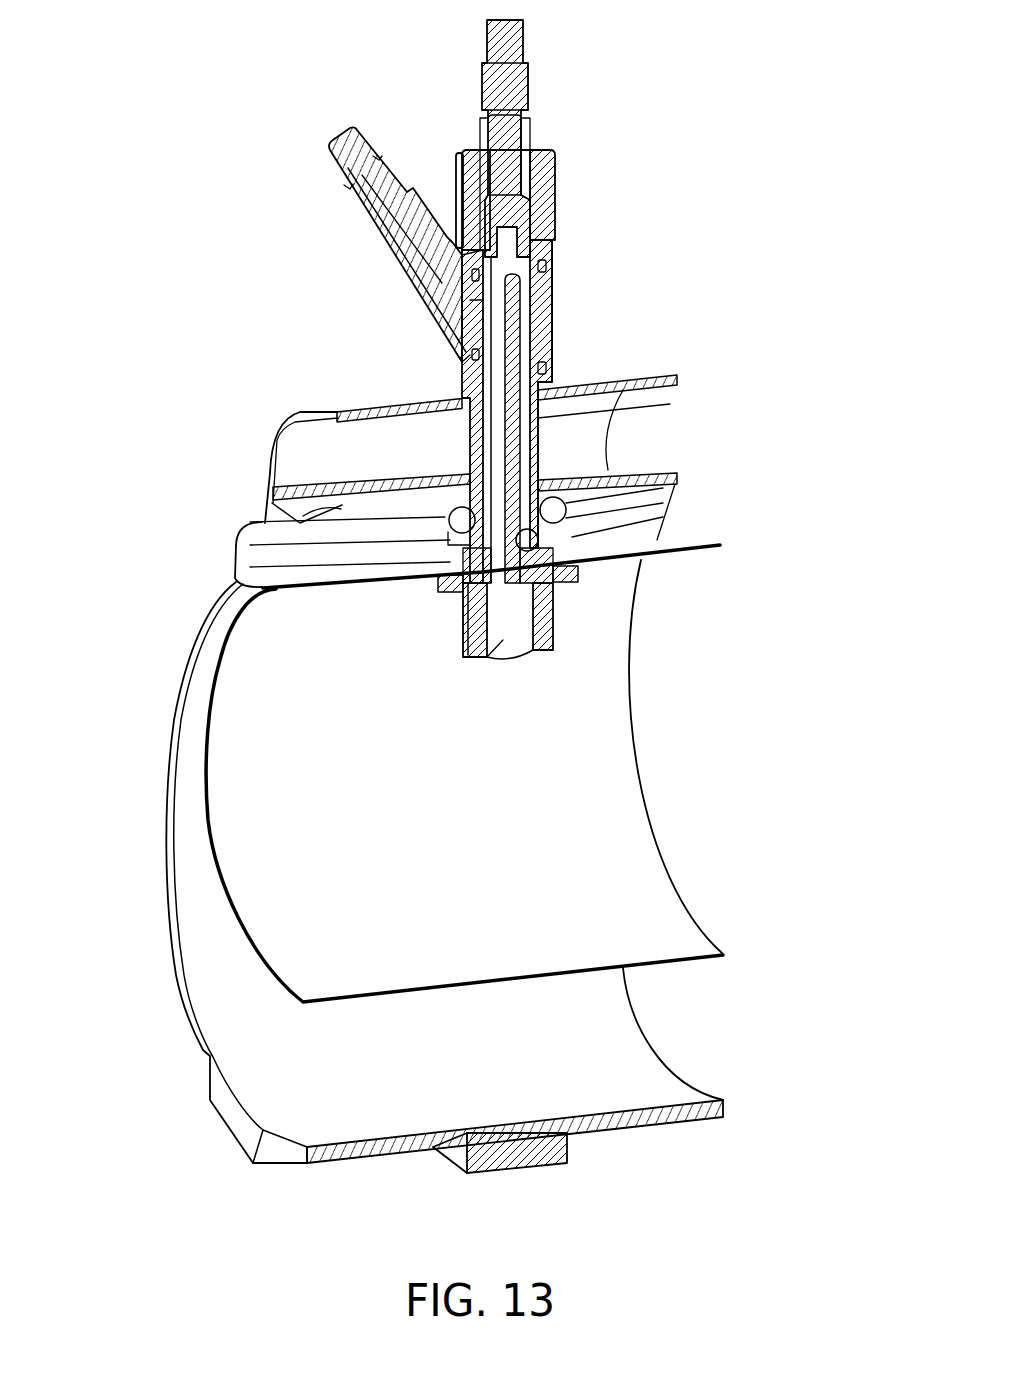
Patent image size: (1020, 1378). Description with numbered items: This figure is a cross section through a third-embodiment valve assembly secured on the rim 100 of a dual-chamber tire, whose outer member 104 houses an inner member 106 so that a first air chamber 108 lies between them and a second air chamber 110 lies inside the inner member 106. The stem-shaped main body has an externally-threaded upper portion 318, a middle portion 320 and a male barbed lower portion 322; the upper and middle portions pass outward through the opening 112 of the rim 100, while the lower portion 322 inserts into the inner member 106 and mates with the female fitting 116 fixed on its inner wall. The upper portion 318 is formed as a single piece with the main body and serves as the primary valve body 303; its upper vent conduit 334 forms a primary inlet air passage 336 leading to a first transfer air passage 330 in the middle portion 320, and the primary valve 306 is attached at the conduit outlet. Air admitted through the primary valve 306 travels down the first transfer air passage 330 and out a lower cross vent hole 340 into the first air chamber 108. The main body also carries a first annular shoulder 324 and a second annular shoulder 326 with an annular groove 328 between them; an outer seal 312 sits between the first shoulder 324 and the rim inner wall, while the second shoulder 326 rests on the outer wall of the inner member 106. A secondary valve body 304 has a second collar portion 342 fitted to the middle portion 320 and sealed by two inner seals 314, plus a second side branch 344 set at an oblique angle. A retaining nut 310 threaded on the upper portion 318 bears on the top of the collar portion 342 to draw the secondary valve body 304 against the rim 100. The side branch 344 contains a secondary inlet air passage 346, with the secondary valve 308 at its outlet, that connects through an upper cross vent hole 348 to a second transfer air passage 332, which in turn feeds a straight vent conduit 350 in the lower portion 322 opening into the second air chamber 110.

The rim 100 is at (280, 418).
The outer member 104 is at (206, 1031).
The inner member 106 is at (642, 808).
The first air chamber 108 is at (236, 962).
The second air chamber 110 is at (547, 752).
The opening 112 is at (477, 493).
The female fitting 116 is at (556, 630).
The primary valve body 303 is at (535, 172).
The secondary valve body 304 is at (376, 243).
The primary valve 306 is at (530, 44).
The secondary valve 308 is at (335, 169).
The retaining nut 310 is at (458, 148).
The outer seal 312 is at (555, 505).
The inner seals 314 is at (550, 261).
The externally-threaded upper portion 318 is at (597, 169).
The middle portion 320 is at (665, 380).
The male barbed lower portion 322 is at (487, 640).
The first annular shoulder 324 is at (545, 521).
The second annular shoulder 326 is at (540, 552).
The annular groove 328 is at (537, 538).
The first transfer air passage 330 is at (523, 298).
The second transfer air passage 332 is at (488, 443).
The upper vent conduit 334 is at (619, 331).
The primary inlet air passage 336 is at (535, 222).
The lower cross vent hole 340 is at (580, 582).
The second collar portion 342 is at (552, 320).
The second side branch 344 is at (392, 267).
The secondary inlet air passage 346 is at (453, 322).
The upper cross vent hole 348 is at (482, 328).
The straight vent conduit 350 is at (503, 640).